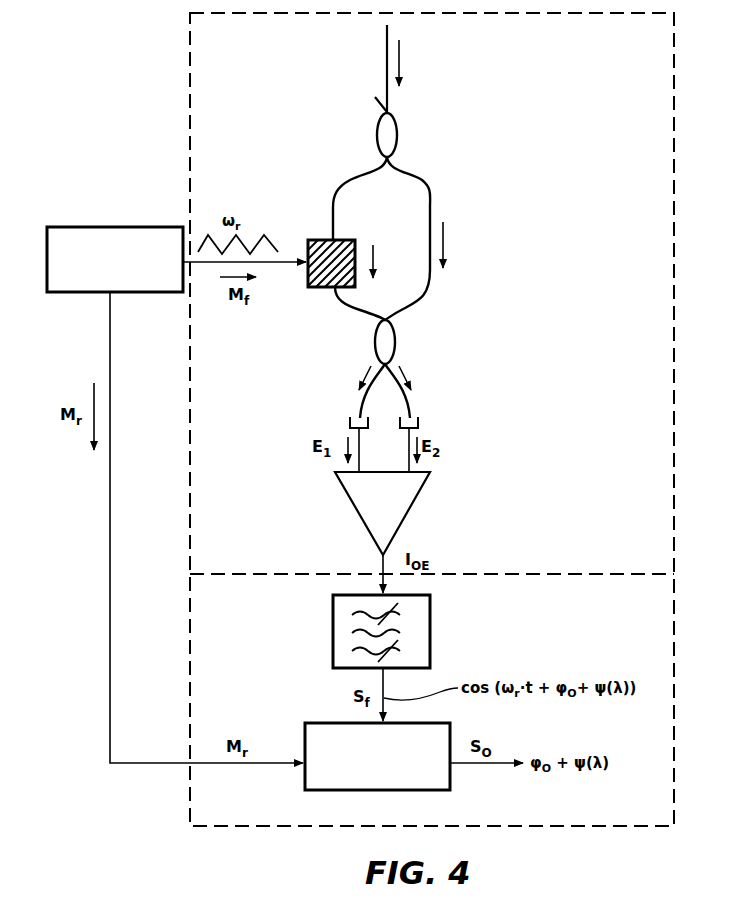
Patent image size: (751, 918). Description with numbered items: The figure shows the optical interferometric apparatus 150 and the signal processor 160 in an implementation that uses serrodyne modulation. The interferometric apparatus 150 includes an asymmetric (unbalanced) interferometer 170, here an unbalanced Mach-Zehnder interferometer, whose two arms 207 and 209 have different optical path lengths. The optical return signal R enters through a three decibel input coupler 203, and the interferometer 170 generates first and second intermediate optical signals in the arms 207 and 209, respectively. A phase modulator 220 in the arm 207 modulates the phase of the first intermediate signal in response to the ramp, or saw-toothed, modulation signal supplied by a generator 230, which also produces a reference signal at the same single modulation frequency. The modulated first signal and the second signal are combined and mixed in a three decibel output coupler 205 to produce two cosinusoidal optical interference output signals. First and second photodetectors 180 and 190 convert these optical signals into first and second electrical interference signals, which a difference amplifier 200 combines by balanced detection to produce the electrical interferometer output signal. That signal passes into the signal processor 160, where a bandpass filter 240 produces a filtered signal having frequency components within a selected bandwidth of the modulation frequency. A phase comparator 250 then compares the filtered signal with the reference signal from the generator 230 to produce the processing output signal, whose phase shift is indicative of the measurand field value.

The optical interferometric apparatus 150 is at (622, 287).
The signal processor 160 is at (652, 758).
The asymmetric (unbalanced) interferometer 170 is at (460, 221).
The first photodetector 180 is at (347, 433).
The second photodetector 190 is at (420, 425).
The difference amplifier 200 is at (397, 503).
The 3 db input coupler 203 is at (393, 134).
The output coupler 205 is at (389, 342).
The first arm 207 is at (348, 180).
The second arm 209 is at (438, 199).
The phase modulator 220 is at (310, 240).
The generator 230 is at (143, 208).
The bandpass filter 240 is at (333, 622).
The phase comparator 250 is at (425, 778).